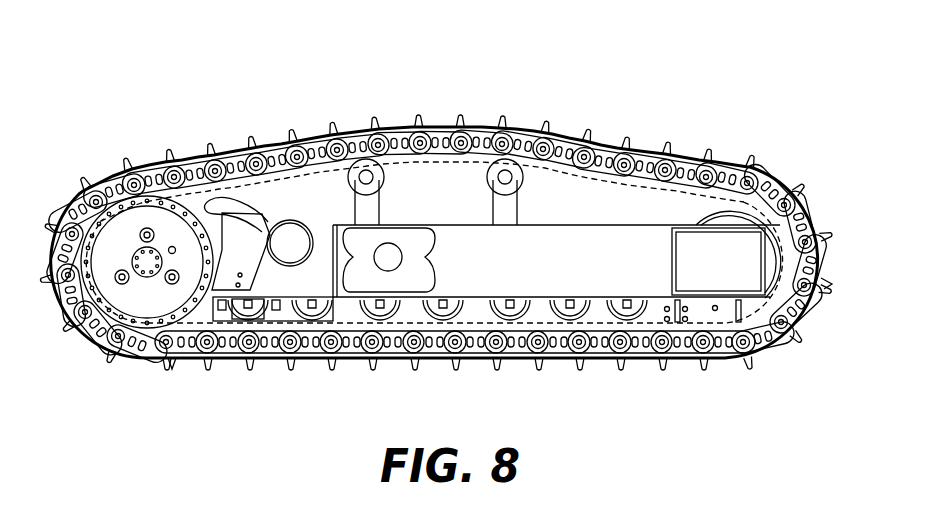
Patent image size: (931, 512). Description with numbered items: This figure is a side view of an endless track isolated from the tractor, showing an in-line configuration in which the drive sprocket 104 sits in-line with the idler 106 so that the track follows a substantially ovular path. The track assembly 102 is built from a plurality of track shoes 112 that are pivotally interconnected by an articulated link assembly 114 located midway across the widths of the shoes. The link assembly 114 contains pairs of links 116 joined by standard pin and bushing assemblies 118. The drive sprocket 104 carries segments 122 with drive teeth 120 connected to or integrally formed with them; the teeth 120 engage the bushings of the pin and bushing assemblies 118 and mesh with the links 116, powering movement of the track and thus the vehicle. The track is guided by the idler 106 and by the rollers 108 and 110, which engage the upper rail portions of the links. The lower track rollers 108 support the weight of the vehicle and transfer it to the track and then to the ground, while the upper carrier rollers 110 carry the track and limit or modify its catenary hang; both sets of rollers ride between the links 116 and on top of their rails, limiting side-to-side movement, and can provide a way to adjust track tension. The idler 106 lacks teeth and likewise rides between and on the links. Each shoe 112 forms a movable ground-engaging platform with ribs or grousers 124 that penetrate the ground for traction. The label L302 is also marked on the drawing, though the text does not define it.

The track assembly 102 is at (795, 124).
The drive sprocket 104 is at (112, 353).
The idler 106 is at (748, 310).
The track rollers 108 is at (572, 307).
The carrier rollers 110 is at (485, 177).
The track shoes 112 is at (395, 123).
The articulated link assembly 114 is at (258, 150).
The links 116 is at (195, 178).
The pin and bushing assemblies 118 is at (318, 148).
The drive teeth 120 is at (267, 205).
The segments 122 is at (160, 185).
The grousers 124 is at (827, 282).
The track length L302 is at (687, 155).